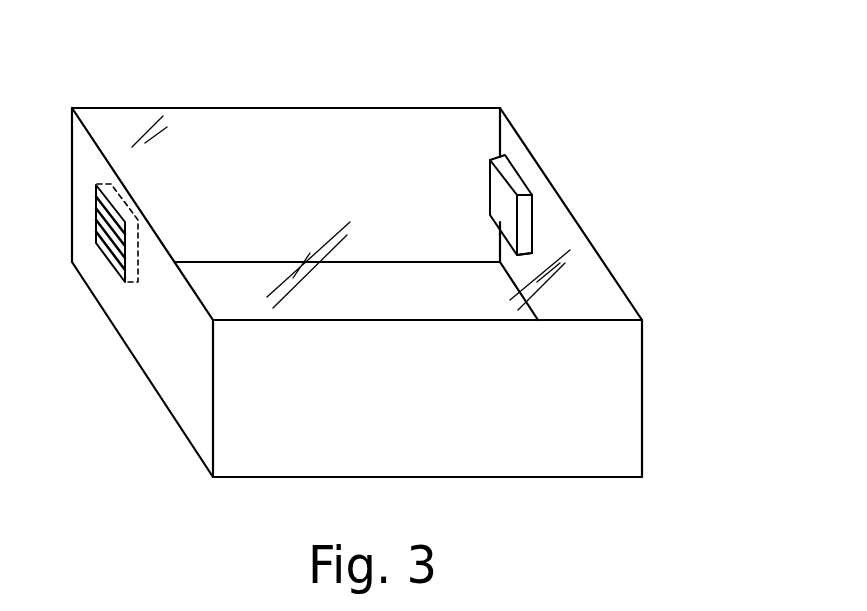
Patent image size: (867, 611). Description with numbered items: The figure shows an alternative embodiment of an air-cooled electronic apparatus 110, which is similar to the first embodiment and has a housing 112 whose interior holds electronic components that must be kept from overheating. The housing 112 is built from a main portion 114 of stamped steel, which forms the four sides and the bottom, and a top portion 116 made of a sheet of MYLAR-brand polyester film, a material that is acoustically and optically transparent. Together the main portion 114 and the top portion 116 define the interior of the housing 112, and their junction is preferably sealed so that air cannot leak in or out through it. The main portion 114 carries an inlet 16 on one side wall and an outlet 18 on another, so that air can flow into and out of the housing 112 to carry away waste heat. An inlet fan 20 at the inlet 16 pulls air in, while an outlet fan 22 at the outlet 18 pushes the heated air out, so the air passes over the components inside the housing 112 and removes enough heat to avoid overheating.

The air-cooled electronic apparatus 110 is at (606, 147).
The housing 112 is at (436, 76).
The main portion 114 is at (664, 367).
The top portion 116 is at (190, 124).
The inlet 16 is at (119, 286).
The outlet 18 is at (536, 228).
The inlet fan 20 is at (141, 257).
The outlet fan 22 is at (481, 203).